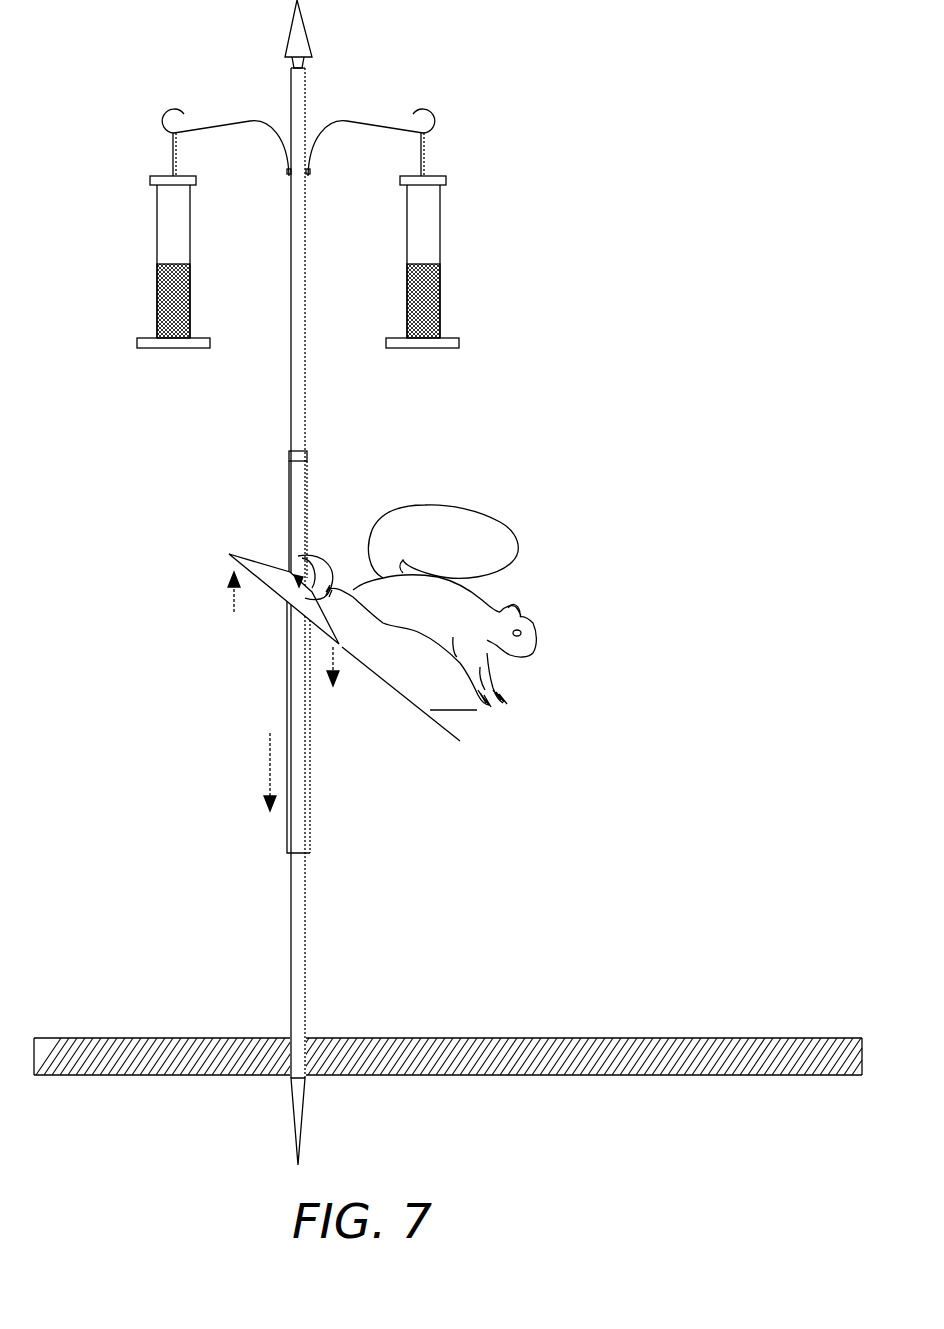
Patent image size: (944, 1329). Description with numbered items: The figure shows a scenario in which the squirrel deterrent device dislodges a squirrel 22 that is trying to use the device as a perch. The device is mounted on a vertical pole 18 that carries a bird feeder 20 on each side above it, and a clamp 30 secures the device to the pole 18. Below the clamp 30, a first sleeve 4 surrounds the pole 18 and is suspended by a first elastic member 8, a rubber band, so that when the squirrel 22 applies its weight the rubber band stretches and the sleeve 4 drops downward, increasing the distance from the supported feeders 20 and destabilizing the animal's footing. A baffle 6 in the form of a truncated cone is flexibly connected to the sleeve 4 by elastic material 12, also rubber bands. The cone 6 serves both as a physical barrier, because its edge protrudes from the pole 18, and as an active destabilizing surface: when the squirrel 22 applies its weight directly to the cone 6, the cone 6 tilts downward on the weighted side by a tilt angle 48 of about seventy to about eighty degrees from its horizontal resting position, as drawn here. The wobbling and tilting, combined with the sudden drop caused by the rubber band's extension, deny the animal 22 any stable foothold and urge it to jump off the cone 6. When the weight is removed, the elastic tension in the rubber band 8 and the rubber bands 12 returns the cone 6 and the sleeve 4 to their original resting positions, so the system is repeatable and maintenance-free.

The pole 18 is at (305, 348).
The bird feeder 20 is at (190, 247).
The clamp 30 is at (307, 455).
The first elastic member 8 is at (289, 474).
The first sleeve 4 is at (287, 683).
The baffle 6 is at (243, 553).
The material flexibly connecting baffle and sleeve 12 is at (292, 572).
The tilt angle of cone 48 is at (452, 711).
The squirrel 22 is at (500, 605).